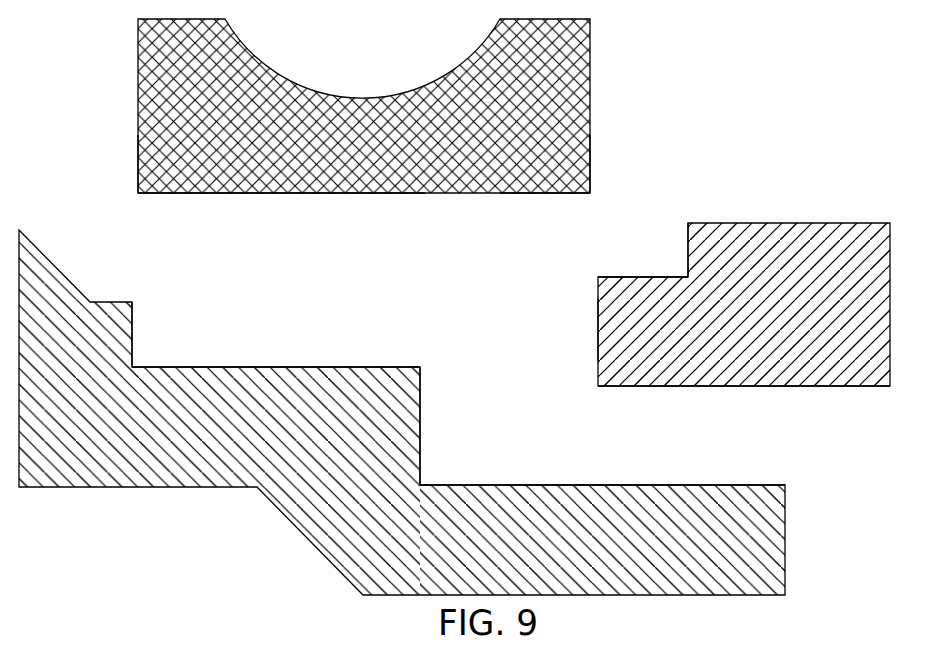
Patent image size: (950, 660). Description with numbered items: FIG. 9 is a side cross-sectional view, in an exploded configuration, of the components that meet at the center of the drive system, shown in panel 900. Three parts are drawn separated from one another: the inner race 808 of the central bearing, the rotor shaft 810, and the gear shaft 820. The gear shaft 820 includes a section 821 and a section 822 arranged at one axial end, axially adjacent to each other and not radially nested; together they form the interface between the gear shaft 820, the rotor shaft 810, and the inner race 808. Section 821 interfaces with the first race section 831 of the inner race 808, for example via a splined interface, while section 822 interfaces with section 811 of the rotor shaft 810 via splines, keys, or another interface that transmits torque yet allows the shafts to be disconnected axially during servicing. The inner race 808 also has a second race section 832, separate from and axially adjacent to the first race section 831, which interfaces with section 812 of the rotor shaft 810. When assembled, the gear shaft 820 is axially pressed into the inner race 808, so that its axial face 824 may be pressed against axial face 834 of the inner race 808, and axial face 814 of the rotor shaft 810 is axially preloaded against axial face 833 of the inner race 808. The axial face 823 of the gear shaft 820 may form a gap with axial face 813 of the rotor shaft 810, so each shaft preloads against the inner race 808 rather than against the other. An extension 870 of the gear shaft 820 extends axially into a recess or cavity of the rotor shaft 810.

The panel 900 is at (825, 50).
The inner race 808 is at (529, 117).
The rotor shaft 810 is at (809, 317).
The section 811 is at (890, 390).
The section 812 is at (677, 265).
The axial face 813 is at (590, 362).
The axial face 814 is at (686, 243).
The gear shaft 820 is at (291, 425).
The section 821 is at (158, 350).
The section 822 is at (777, 473).
The axial face 823 is at (442, 437).
The axial face 824 is at (138, 357).
The first race section 831 is at (425, 208).
The second race section 832 is at (585, 208).
The axial face 833 is at (600, 193).
The axial face 834 is at (128, 135).
The extension 870 is at (621, 547).